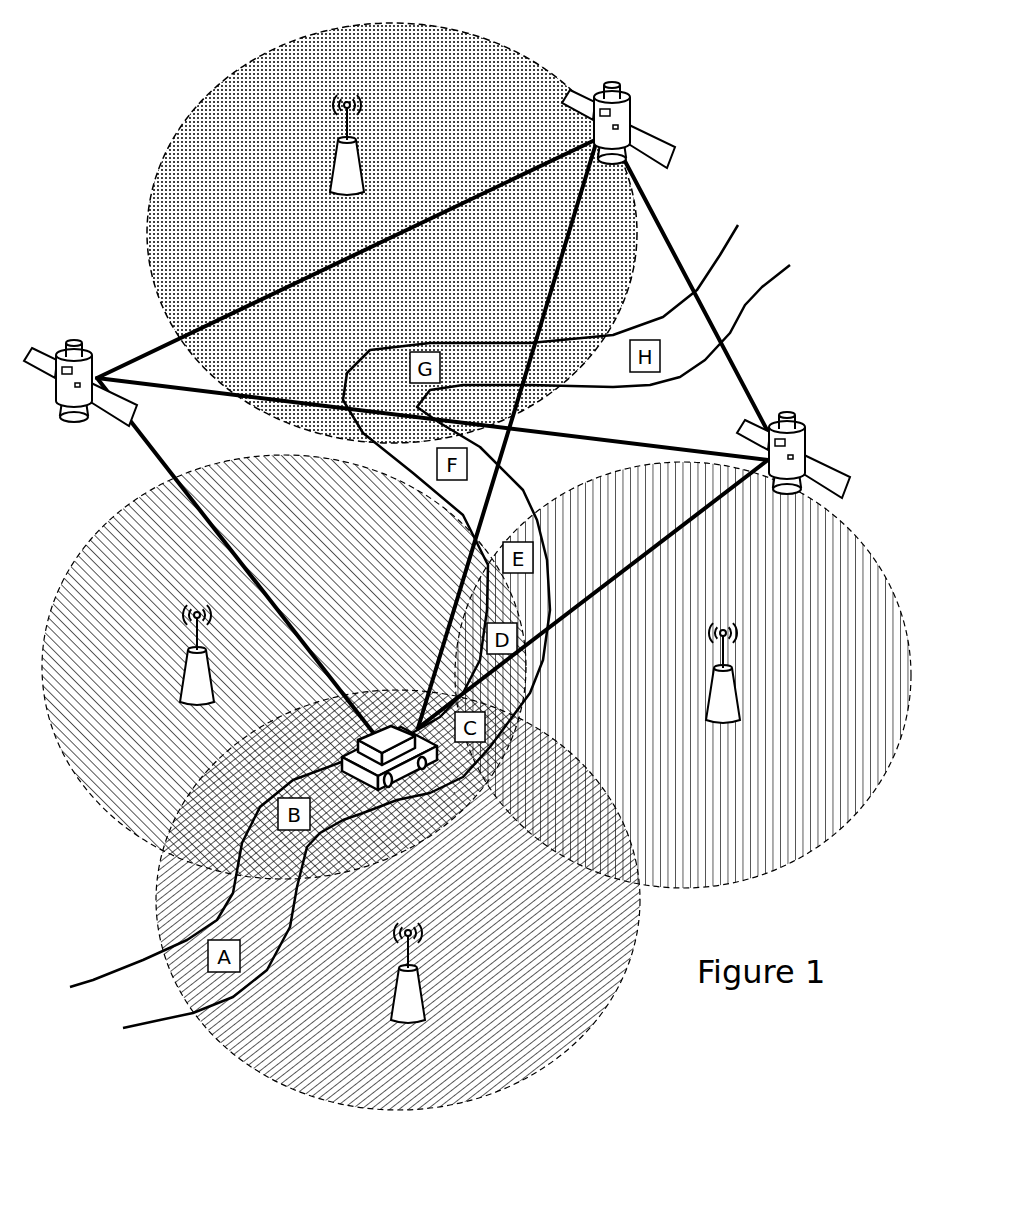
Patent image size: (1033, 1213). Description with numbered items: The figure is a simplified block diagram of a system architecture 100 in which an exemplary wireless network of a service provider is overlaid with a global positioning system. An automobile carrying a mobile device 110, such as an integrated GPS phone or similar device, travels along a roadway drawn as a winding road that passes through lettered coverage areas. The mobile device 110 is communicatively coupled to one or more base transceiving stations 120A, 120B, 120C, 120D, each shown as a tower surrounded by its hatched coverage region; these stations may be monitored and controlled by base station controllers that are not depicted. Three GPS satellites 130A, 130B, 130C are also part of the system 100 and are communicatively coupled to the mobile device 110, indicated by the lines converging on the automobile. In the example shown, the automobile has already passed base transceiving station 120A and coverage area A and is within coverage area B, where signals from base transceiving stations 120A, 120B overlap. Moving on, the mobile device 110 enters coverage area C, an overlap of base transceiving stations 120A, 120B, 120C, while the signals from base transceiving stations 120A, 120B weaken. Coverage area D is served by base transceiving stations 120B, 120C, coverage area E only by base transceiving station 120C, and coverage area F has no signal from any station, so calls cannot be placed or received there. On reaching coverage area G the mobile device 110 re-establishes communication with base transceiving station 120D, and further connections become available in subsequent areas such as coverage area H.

The system architecture 100 is at (761, 177).
The mobile device 110 is at (350, 747).
The base transceiving station 120A is at (393, 987).
The base transceiving station 120B is at (182, 668).
The base transceiving station 120C is at (710, 690).
The base transceiving station 120D is at (333, 157).
The GPS satellite 130A is at (103, 363).
The GPS satellite 130B is at (813, 448).
The GPS satellite 130C is at (635, 118).